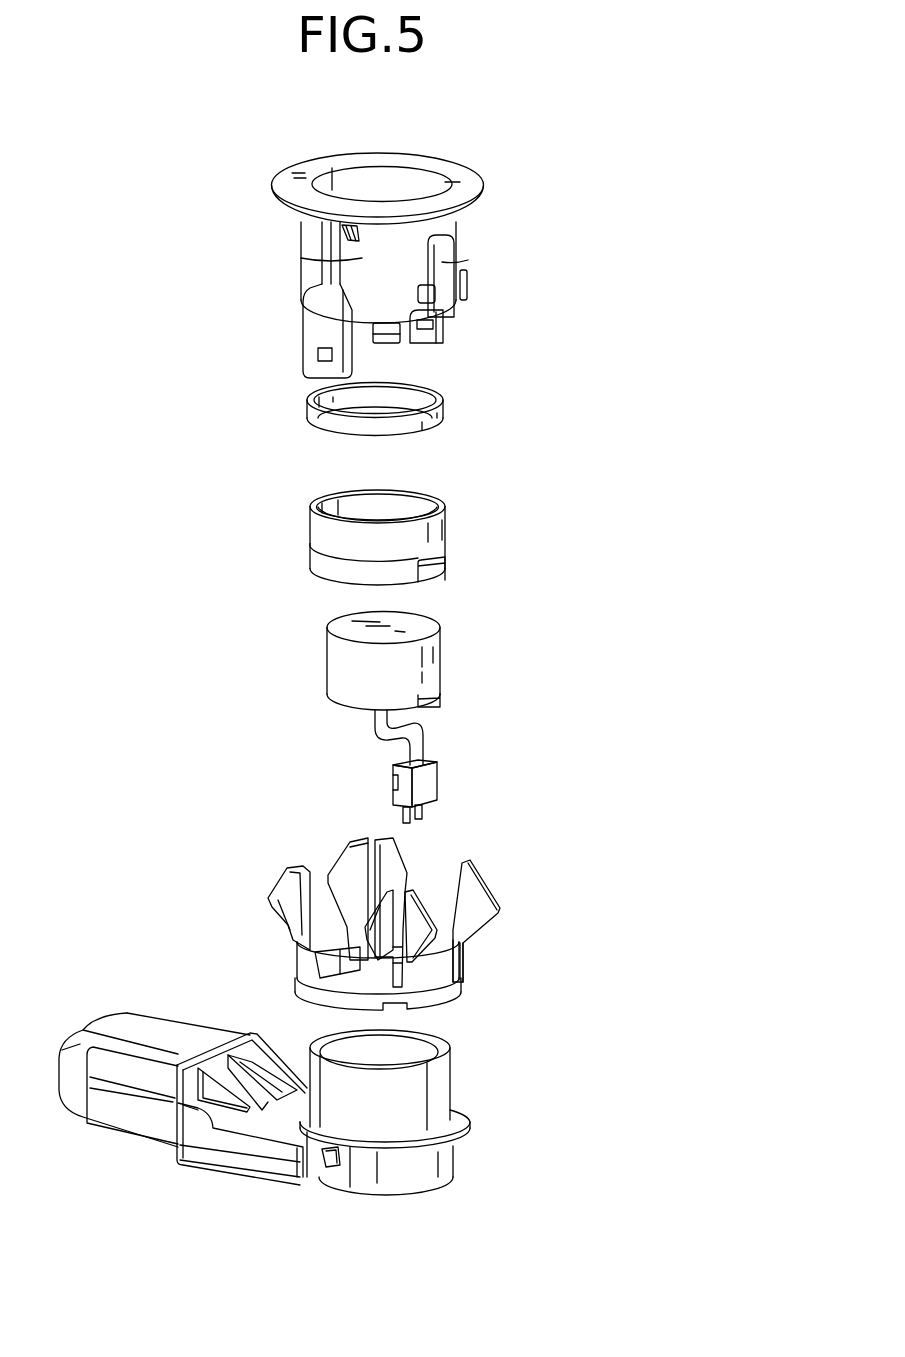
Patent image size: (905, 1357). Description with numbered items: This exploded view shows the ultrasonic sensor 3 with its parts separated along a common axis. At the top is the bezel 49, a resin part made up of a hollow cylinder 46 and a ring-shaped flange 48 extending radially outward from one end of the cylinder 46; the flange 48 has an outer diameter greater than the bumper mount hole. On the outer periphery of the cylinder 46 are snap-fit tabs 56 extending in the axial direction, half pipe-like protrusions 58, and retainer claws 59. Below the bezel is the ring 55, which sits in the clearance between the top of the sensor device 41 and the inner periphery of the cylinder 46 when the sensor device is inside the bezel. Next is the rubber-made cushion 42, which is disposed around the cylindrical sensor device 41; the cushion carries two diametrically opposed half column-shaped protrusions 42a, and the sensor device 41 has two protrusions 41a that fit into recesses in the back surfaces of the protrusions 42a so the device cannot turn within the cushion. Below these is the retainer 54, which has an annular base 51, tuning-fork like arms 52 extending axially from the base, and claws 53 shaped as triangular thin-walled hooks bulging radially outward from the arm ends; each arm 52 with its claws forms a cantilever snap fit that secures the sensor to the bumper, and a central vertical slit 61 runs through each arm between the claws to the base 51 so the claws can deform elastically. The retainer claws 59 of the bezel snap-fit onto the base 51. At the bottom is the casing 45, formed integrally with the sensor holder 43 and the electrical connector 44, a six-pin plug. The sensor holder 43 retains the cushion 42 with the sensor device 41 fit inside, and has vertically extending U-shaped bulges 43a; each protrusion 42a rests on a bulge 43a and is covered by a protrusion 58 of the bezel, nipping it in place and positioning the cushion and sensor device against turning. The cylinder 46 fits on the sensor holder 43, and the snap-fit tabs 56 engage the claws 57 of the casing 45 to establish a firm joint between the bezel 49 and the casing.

The ultrasonic sensor 3 is at (441, 141).
The flange 48 is at (320, 168).
The bezel 49 is at (491, 163).
The hollow cylinder 46 is at (363, 258).
The snap-fit tabs 56 is at (326, 319).
The half pipe-like protrusions 58 is at (442, 263).
The retainer claws 59 is at (392, 347).
The ring 55 is at (308, 412).
The cushion 42 is at (308, 537).
The protrusions 42a is at (450, 591).
The sensor device 41 is at (327, 670).
The protrusions 41a is at (442, 712).
The slit 61 is at (372, 867).
The retainer 54 is at (270, 859).
The claws 53 is at (488, 880).
The arms 52 is at (463, 960).
The annular base 51 is at (447, 1003).
The electrical connector 44 is at (102, 1025).
The bulges 43a is at (442, 1083).
The sensor holder 43 is at (445, 1163).
The casing 45 is at (158, 1158).
The claws 57 is at (323, 1166).